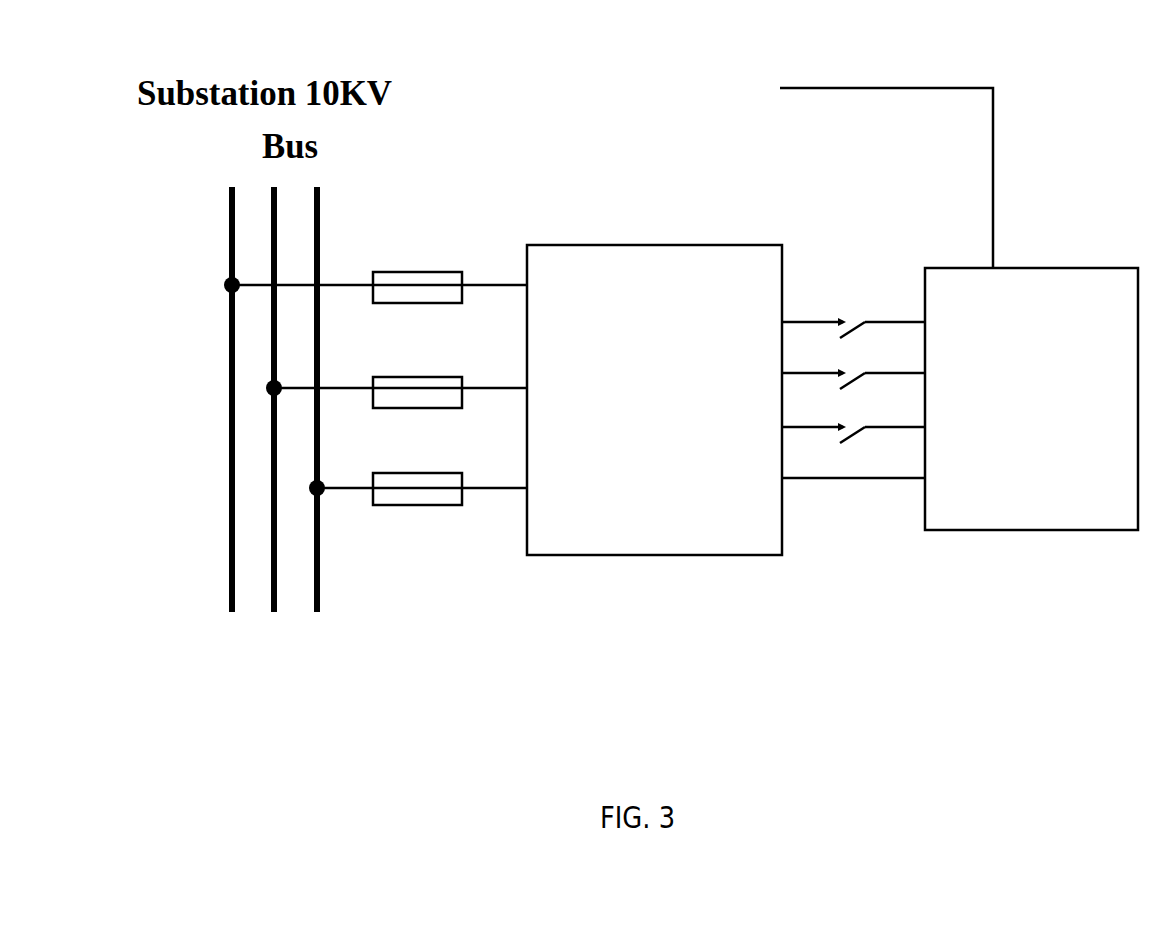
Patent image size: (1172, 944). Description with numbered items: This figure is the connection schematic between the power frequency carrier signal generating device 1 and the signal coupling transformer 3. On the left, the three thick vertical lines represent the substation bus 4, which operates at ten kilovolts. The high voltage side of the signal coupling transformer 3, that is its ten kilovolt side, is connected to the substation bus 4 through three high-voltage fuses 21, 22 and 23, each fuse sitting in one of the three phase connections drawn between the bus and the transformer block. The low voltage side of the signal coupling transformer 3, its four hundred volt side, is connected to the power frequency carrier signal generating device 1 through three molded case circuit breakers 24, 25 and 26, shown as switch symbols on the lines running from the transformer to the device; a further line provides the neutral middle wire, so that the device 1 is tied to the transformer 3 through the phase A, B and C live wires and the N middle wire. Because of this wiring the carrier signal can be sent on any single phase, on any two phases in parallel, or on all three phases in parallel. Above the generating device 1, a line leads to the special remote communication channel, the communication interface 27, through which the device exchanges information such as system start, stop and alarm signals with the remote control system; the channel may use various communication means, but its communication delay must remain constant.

The power frequency carrier signal generating device 1 is at (993, 533).
The signal coupling transformer 3 is at (787, 560).
The substation bus 4 is at (323, 563).
The high-voltage fuse 21 is at (418, 527).
The high-voltage fuse 22 is at (428, 423).
The high-voltage fuse 23 is at (448, 330).
The molded case circuit breaker 24 is at (822, 410).
The molded case circuit breaker 25 is at (822, 350).
The molded case circuit breaker 26 is at (822, 293).
The communication interface 27 is at (1007, 227).